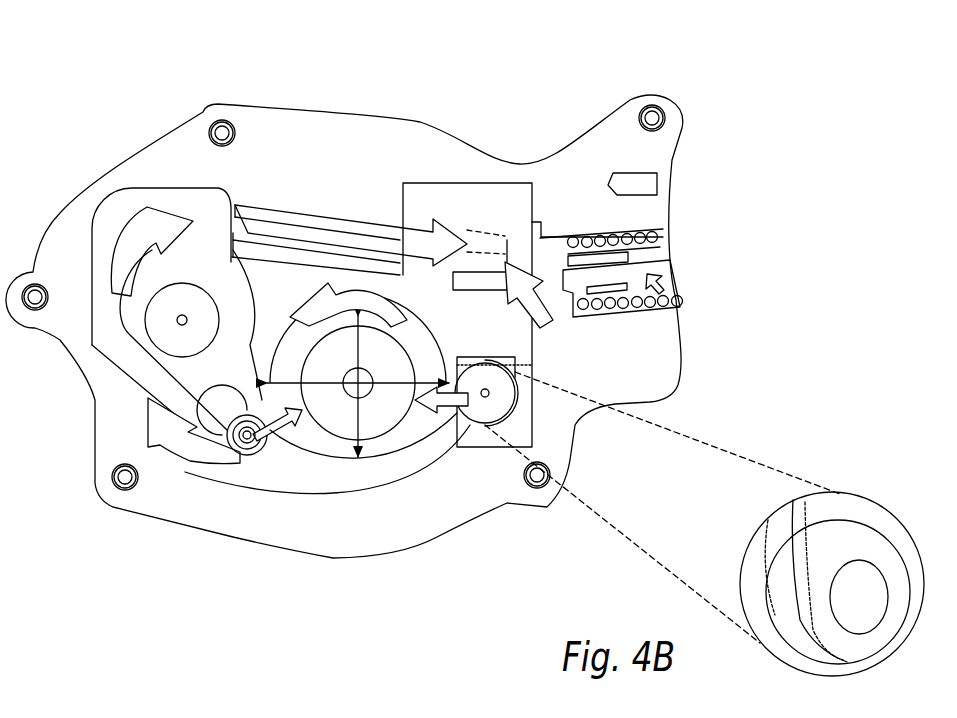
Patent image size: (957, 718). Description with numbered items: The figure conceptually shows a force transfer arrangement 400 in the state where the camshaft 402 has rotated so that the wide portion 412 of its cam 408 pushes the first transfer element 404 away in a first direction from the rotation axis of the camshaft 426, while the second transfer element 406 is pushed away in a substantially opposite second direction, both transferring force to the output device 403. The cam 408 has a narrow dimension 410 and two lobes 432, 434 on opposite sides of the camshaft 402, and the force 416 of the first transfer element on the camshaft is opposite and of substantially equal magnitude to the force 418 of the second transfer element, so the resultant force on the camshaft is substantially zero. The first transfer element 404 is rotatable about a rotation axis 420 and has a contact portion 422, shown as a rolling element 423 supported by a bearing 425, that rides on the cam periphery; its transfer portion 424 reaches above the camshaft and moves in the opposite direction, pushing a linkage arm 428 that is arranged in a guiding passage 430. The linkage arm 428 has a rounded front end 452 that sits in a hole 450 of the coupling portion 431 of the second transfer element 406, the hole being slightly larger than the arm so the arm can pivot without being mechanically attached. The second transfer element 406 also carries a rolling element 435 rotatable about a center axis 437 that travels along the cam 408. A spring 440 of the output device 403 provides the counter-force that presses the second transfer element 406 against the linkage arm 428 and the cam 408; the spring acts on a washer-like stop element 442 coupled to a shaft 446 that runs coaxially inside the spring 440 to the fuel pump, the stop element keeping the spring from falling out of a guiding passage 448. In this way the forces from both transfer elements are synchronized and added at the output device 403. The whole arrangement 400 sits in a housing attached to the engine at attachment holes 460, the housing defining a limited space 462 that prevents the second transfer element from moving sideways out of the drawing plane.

The force transfer arrangement 400 is at (260, 168).
The camshaft 402 is at (318, 468).
The output device 403 is at (681, 373).
The first transfer element 404 is at (140, 378).
The second transfer element 406 is at (484, 416).
The cam 408 is at (334, 468).
The narrow dimension 410 is at (388, 412).
The wide portion 412 is at (372, 322).
The force 416 is at (277, 444).
The force 418 is at (457, 182).
The rotation axis 420 is at (172, 324).
The contact portion 422 is at (233, 476).
The rolling element 423 is at (242, 470).
The transfer portion 424 is at (158, 186).
The bearing 425 is at (252, 470).
The rotation axis of the camshaft 426 is at (345, 372).
The linkage arm 428 is at (311, 215).
The guiding passage 430 is at (337, 217).
The coupling portion 431 is at (490, 263).
The lobe 432 is at (283, 223).
The lobe 434 is at (460, 465).
The rolling element 435 is at (495, 380).
The center axis 437 is at (520, 373).
The spring 440 is at (620, 232).
The stop element 442 is at (580, 262).
The shaft 446 is at (667, 250).
The guiding passage 448 is at (556, 235).
The hole 450 is at (504, 228).
The rounded front end 452 is at (507, 248).
The attachment holes 460 is at (214, 120).
The space 462 is at (112, 206).